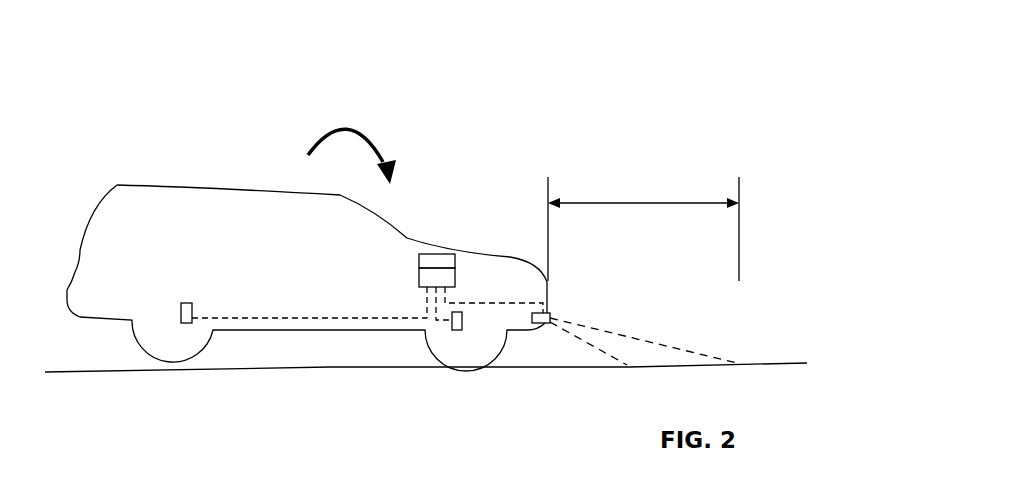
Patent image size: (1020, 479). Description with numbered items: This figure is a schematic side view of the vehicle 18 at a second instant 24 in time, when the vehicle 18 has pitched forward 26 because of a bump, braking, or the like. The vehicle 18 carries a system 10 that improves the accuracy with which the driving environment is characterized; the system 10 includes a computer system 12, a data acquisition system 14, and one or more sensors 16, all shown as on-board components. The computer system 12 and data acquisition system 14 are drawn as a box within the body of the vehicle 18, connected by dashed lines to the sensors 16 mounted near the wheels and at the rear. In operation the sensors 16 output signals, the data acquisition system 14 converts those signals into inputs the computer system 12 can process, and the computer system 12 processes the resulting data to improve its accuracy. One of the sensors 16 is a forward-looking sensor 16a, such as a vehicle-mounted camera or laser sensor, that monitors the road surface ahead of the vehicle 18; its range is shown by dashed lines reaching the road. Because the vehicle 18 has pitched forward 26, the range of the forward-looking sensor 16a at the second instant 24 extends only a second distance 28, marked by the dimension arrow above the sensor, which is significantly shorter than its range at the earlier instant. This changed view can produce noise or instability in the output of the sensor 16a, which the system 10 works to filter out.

The system 10 is at (499, 113).
The computer system 12 is at (430, 262).
The data acquisition system 14 is at (430, 278).
The sensors 16 is at (190, 306).
The forward-looking sensor 16a is at (549, 315).
The vehicle 18 is at (118, 202).
The second instant 24 is at (647, 300).
The pitched forward 26 is at (373, 130).
The second distance 28 is at (631, 202).